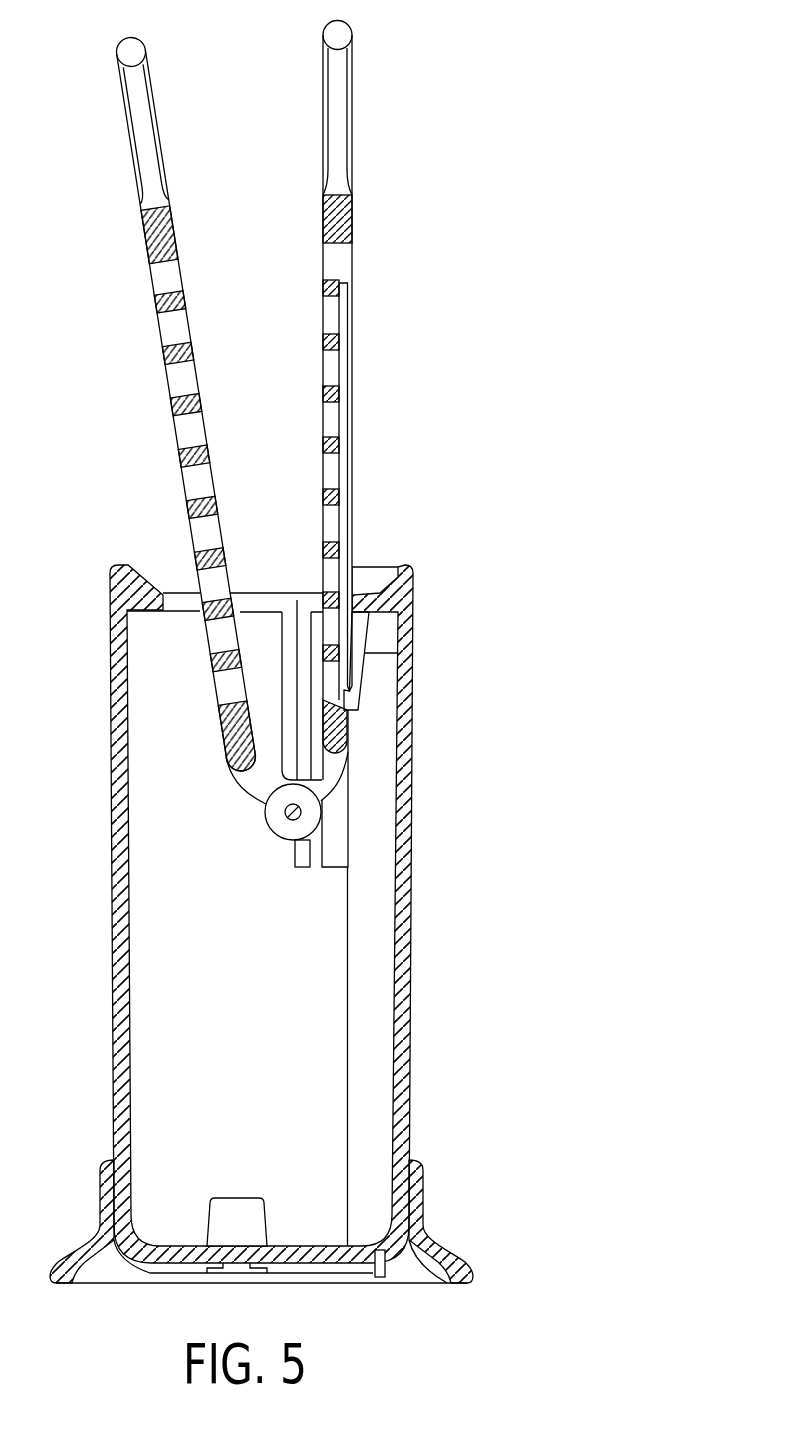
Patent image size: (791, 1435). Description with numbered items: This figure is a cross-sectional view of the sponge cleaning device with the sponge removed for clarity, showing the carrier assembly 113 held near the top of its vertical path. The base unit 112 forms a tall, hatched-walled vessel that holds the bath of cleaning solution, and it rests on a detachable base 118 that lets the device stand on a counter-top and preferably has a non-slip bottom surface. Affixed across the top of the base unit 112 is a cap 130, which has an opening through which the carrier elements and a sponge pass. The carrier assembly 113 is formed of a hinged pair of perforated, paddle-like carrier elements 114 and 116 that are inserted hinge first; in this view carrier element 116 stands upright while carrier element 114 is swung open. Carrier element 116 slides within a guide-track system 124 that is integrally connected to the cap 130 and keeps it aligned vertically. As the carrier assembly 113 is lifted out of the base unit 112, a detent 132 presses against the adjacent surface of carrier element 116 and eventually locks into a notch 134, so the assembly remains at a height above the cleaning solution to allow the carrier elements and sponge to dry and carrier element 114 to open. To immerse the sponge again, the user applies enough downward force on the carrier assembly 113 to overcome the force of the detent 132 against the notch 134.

The base unit 112 is at (111, 781).
The carrier assembly 113 is at (298, 247).
The carrier element 114 is at (127, 120).
The carrier element 116 is at (352, 112).
The detachable base 118 is at (93, 1253).
The guide-track system 124 is at (319, 634).
The cap 130 is at (408, 567).
The detent 132 is at (349, 690).
The notch 134 is at (346, 698).